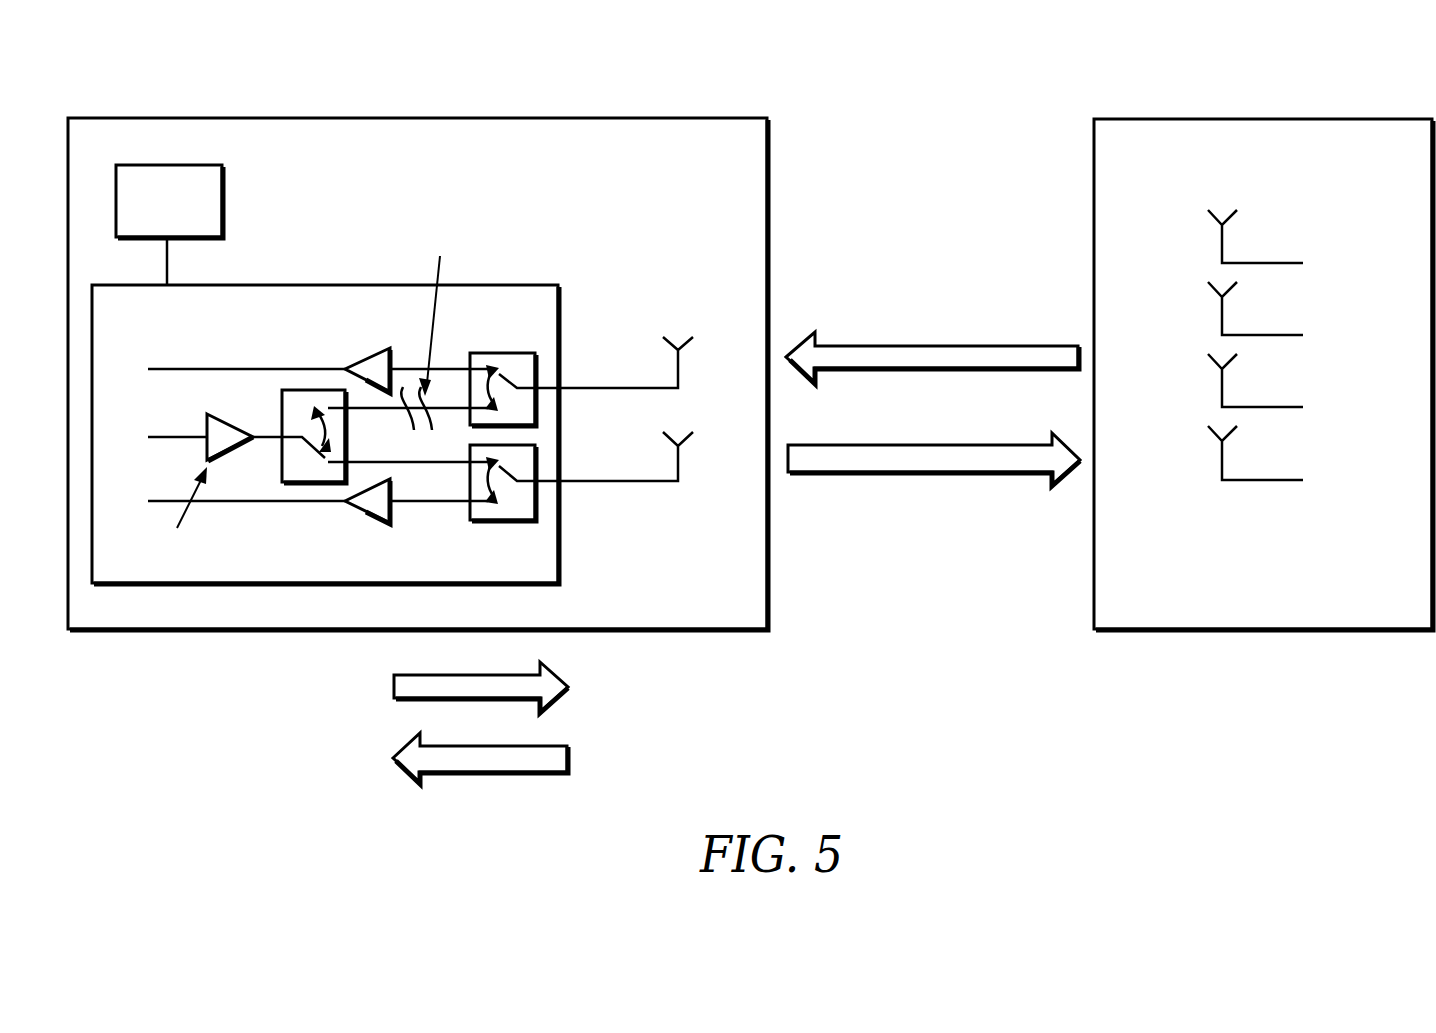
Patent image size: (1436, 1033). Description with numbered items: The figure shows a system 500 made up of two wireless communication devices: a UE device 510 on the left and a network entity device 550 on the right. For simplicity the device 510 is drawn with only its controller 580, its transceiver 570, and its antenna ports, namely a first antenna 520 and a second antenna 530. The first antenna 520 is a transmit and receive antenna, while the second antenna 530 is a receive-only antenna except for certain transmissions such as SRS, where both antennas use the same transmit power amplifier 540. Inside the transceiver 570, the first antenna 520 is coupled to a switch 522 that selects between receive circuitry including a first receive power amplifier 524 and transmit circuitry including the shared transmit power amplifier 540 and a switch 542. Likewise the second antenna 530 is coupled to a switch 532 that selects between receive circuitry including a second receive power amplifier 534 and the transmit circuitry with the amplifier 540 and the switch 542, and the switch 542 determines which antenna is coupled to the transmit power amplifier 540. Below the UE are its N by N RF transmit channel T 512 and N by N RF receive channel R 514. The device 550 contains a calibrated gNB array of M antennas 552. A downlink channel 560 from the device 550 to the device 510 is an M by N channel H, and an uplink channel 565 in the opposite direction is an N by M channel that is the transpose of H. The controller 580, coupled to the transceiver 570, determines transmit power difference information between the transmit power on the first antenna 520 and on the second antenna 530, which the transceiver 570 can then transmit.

The system 500 is at (152, 66).
The wireless communication device 510 is at (668, 118).
The controller 580 is at (224, 200).
The transceiver 570 is at (256, 286).
The second receive power amplifier 534 is at (372, 358).
The first receive power amplifier 524 is at (372, 514).
The transmit power amplifier 540 is at (207, 419).
The switch 542 is at (282, 408).
The switch 532 is at (500, 353).
The switch 522 is at (492, 522).
The second antenna 530 is at (678, 363).
The first antenna 520 is at (678, 452).
The wireless communication device 550 is at (1263, 119).
The antennas 552 is at (1343, 242).
The downlink channel 560 is at (905, 370).
The uplink channel 565 is at (986, 445).
The N×N RF transmit channel T 512 is at (394, 688).
The N×N RF receive channel R 514 is at (393, 758).